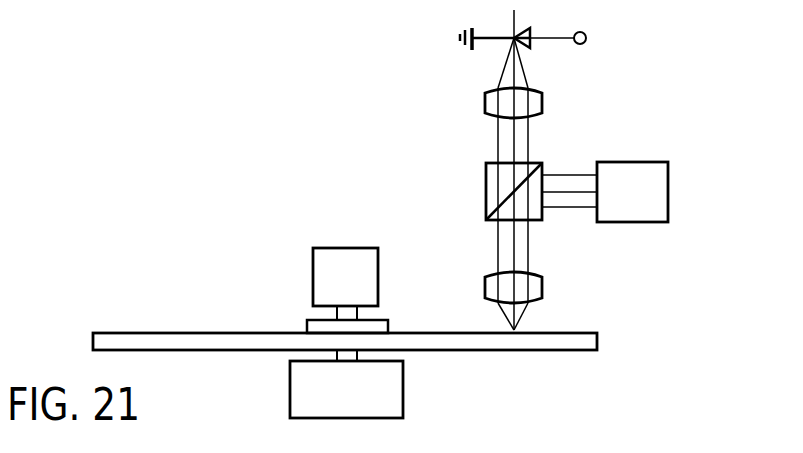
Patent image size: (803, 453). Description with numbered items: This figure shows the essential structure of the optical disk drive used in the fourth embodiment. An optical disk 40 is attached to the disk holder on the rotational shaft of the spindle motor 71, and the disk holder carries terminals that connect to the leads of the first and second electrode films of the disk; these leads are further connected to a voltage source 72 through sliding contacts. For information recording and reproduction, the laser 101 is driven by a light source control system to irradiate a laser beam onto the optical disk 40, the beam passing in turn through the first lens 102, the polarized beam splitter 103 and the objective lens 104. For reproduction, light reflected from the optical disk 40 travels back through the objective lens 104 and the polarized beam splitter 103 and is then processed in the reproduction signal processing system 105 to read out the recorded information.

The laser 101 is at (586, 38).
The first lens 102 is at (542, 103).
The polarized beam splitter 103 is at (486, 170).
The objective lens 104 is at (542, 290).
The reproduction signal processing system 105 is at (668, 195).
The optical disk 40 is at (597, 341).
The spindle motor 71 is at (403, 403).
The voltage source 72 is at (378, 272).